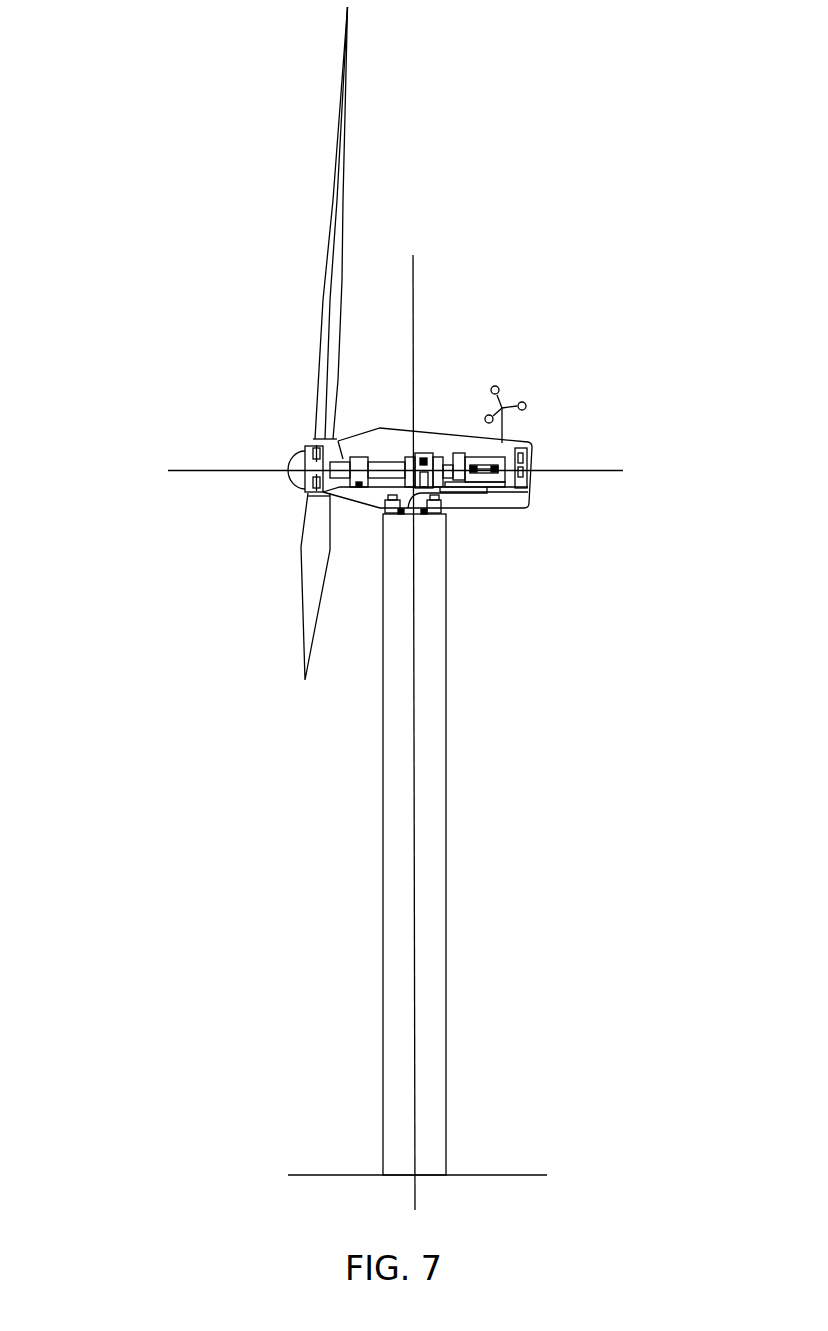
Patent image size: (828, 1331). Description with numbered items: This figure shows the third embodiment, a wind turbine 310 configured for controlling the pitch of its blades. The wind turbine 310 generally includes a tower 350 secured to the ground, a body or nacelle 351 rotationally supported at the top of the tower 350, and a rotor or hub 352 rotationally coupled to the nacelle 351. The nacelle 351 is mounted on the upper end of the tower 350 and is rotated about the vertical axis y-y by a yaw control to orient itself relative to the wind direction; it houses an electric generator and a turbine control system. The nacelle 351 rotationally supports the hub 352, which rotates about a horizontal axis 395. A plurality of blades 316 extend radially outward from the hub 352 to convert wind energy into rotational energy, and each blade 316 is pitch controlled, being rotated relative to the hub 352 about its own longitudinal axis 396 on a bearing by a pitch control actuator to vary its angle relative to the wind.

The wind turbine 310 is at (367, 622).
The blades 316 is at (235, 223).
The tower 350 is at (470, 670).
The nacelle 351 is at (567, 373).
The hub 352 is at (230, 438).
The horizontal axis 395 is at (185, 483).
The longitudinal axis 396 is at (321, 372).